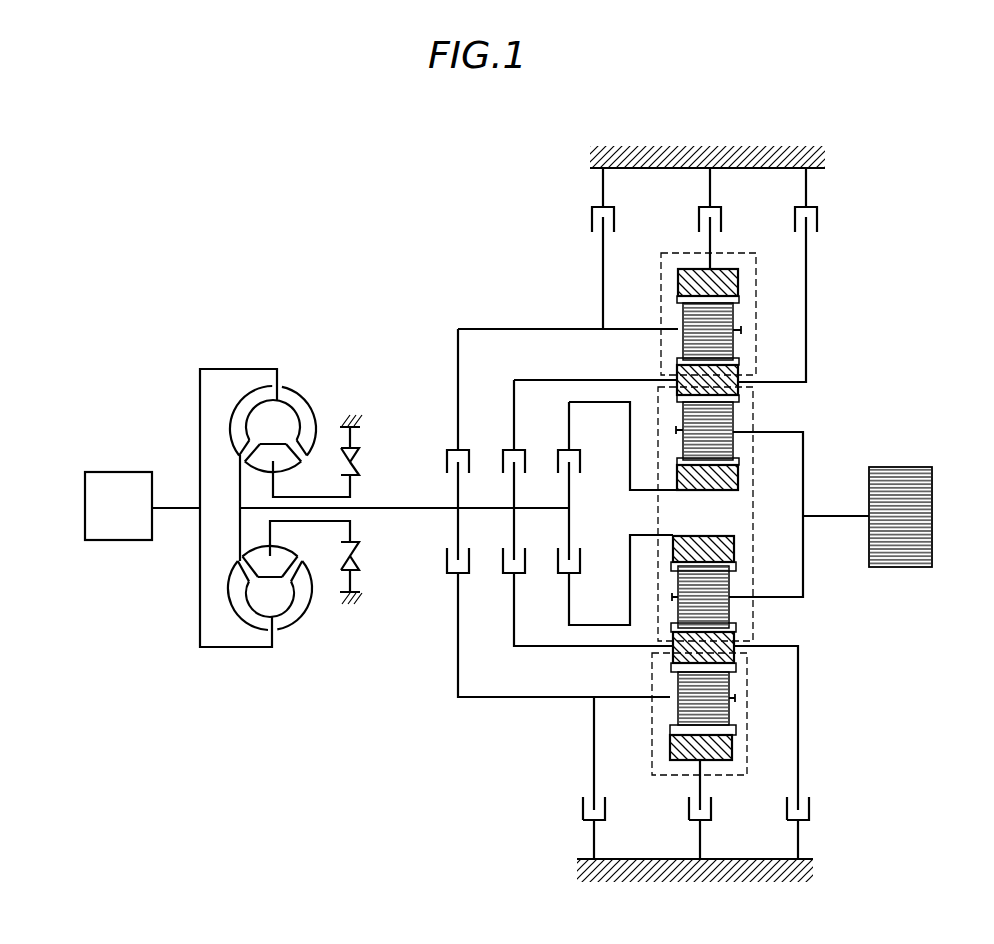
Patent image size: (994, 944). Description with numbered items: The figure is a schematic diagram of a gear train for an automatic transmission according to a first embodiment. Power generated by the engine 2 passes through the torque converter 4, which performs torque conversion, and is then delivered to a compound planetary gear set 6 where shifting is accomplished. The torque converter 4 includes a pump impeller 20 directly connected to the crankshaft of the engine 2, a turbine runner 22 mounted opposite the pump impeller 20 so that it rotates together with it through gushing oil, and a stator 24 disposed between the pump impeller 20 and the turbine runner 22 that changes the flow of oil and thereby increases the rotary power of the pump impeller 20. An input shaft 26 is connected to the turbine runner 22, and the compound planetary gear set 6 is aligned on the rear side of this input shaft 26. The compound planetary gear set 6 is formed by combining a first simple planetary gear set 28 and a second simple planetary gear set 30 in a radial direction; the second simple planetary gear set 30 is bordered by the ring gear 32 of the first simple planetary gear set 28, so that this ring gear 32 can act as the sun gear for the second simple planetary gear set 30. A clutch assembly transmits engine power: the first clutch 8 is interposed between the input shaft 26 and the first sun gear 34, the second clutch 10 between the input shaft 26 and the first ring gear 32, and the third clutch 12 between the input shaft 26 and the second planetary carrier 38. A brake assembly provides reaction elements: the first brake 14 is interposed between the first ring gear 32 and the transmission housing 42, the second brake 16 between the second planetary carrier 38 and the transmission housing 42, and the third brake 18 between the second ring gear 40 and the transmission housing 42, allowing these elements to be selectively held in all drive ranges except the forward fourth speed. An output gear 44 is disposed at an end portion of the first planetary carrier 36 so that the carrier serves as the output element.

The engine 2 is at (121, 472).
The torque converter 4 is at (280, 475).
The compound planetary gear set 6 is at (866, 368).
The first clutch 8 is at (559, 447).
The second clutch 10 is at (504, 447).
The third clutch 12 is at (447, 447).
The first brake 14 is at (815, 206).
The second brake 16 is at (610, 206).
The third brake 18 is at (718, 206).
The pump impeller 20 is at (292, 402).
The turbine runner 22 is at (250, 406).
The stator 24 is at (284, 462).
The input shaft 26 is at (398, 507).
The first simple planetary gear set 28 is at (728, 588).
The second simple planetary gear set 30 is at (762, 327).
The first ring gear 32 is at (740, 376).
The first sun gear 34 is at (739, 472).
The first planetary carrier 36 is at (790, 432).
The second planetary carrier 38 is at (627, 328).
The second ring gear 40 is at (741, 283).
The transmission housing 42 is at (717, 167).
The output gear 44 is at (929, 492).